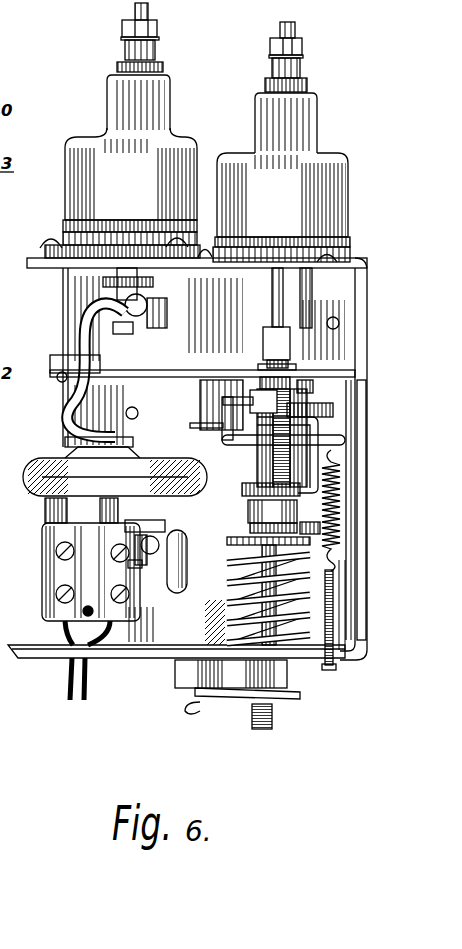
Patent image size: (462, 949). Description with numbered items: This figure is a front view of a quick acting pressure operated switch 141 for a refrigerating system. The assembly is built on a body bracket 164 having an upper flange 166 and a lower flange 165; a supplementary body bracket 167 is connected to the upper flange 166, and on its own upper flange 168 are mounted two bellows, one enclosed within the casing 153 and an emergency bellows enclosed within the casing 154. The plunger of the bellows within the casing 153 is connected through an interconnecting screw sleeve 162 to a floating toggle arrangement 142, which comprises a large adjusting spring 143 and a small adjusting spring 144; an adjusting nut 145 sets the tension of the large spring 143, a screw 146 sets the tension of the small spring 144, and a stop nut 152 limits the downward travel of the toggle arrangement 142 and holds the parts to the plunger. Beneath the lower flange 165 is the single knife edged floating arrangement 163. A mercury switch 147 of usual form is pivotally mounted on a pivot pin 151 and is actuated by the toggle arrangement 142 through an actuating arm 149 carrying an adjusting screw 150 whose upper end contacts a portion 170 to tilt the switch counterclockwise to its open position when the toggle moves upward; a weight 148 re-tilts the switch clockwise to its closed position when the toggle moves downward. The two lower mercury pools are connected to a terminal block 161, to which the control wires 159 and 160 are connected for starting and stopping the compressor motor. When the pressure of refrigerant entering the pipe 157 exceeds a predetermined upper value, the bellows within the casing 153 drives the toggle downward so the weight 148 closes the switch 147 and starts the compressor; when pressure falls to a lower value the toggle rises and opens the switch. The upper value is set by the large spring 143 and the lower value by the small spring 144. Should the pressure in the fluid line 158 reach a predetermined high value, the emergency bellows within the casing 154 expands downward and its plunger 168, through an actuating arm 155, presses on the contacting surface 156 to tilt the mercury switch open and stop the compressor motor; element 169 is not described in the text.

The quick acting pressure operated switch 141 is at (345, 440).
The floating toggle arrangement 142 is at (318, 423).
The large adjusting spring 143 is at (232, 602).
The small adjusting spring 144 is at (340, 508).
The adjusting nut 145 is at (297, 529).
The screw 146 is at (337, 610).
The mercury switch 147 is at (40, 499).
The weight 148 is at (180, 533).
The actuating arm 149 is at (152, 566).
The adjusting screw 150 is at (165, 561).
The pivot pin 151 is at (115, 477).
The stop nut 152 is at (290, 367).
The casing 153 is at (348, 168).
The casing 154 is at (88, 137).
The actuating arm 155 is at (92, 336).
The contacting surface 156 is at (93, 435).
The pipe 157 is at (295, 32).
The fluid line 158 is at (148, 13).
The control wire 159 is at (92, 690).
The control wire 160 is at (67, 690).
The terminal block 161 is at (42, 594).
The interconnecting screw sleeve 162 is at (264, 333).
The single knife edged floating arrangement 163 is at (222, 708).
The body bracket 164 is at (358, 584).
The lower flange 165 is at (303, 662).
The upper flange 166 is at (365, 368).
The supplementary body bracket 167 is at (367, 296).
The upper flange 168 is at (307, 270).
The fitting 169 is at (128, 334).
The portion 170 is at (143, 455).